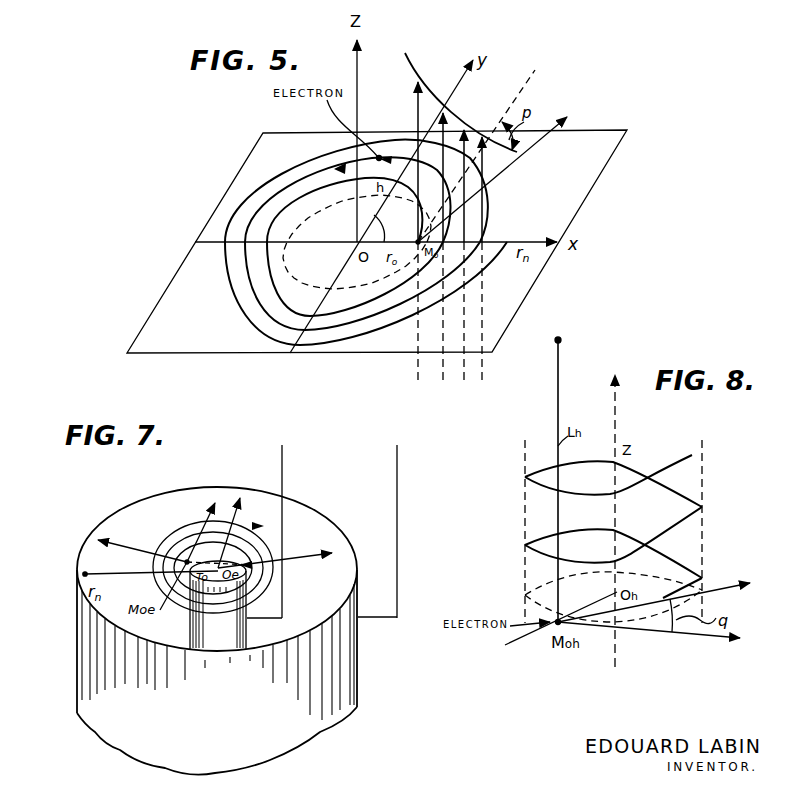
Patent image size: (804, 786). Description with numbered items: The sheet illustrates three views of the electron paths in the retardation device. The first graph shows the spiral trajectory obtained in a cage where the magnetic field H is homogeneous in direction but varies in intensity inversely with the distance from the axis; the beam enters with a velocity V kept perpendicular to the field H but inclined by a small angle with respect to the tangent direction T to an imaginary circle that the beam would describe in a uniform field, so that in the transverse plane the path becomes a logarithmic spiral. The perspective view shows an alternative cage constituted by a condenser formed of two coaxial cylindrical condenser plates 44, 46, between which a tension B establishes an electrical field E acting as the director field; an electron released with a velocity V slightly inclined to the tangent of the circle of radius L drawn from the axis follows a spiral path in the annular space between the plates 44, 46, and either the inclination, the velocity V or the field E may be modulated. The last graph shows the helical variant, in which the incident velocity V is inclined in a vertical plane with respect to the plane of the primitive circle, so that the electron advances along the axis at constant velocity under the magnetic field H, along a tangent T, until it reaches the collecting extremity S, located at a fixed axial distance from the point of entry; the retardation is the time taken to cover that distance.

In FIG. 7, the cylindrical condenser plate 44 is at (357, 660).
In FIG. 7, the cylindrical condenser plate 46 is at (190, 628).
In FIG. 7, the tension B is at (397, 455).
In FIG. 7, the distance L_h L is at (150, 565).
In FIG. 8, the collecting extremity S is at (595, 479).
In FIG. 5, the magnetic field H is at (457, 217).
In FIG. 8, the magnetic field H is at (624, 519).
In FIG. 5, the velocity V is at (499, 177).
In FIG. 7, the velocity V is at (201, 531).
In FIG. 8, the velocity V is at (662, 596).
In FIG. 5, the tangent direction T is at (483, 151).
In FIG. 8, the tangent direction T is at (657, 636).
In FIG. 7, the electrical field E is at (215, 538).